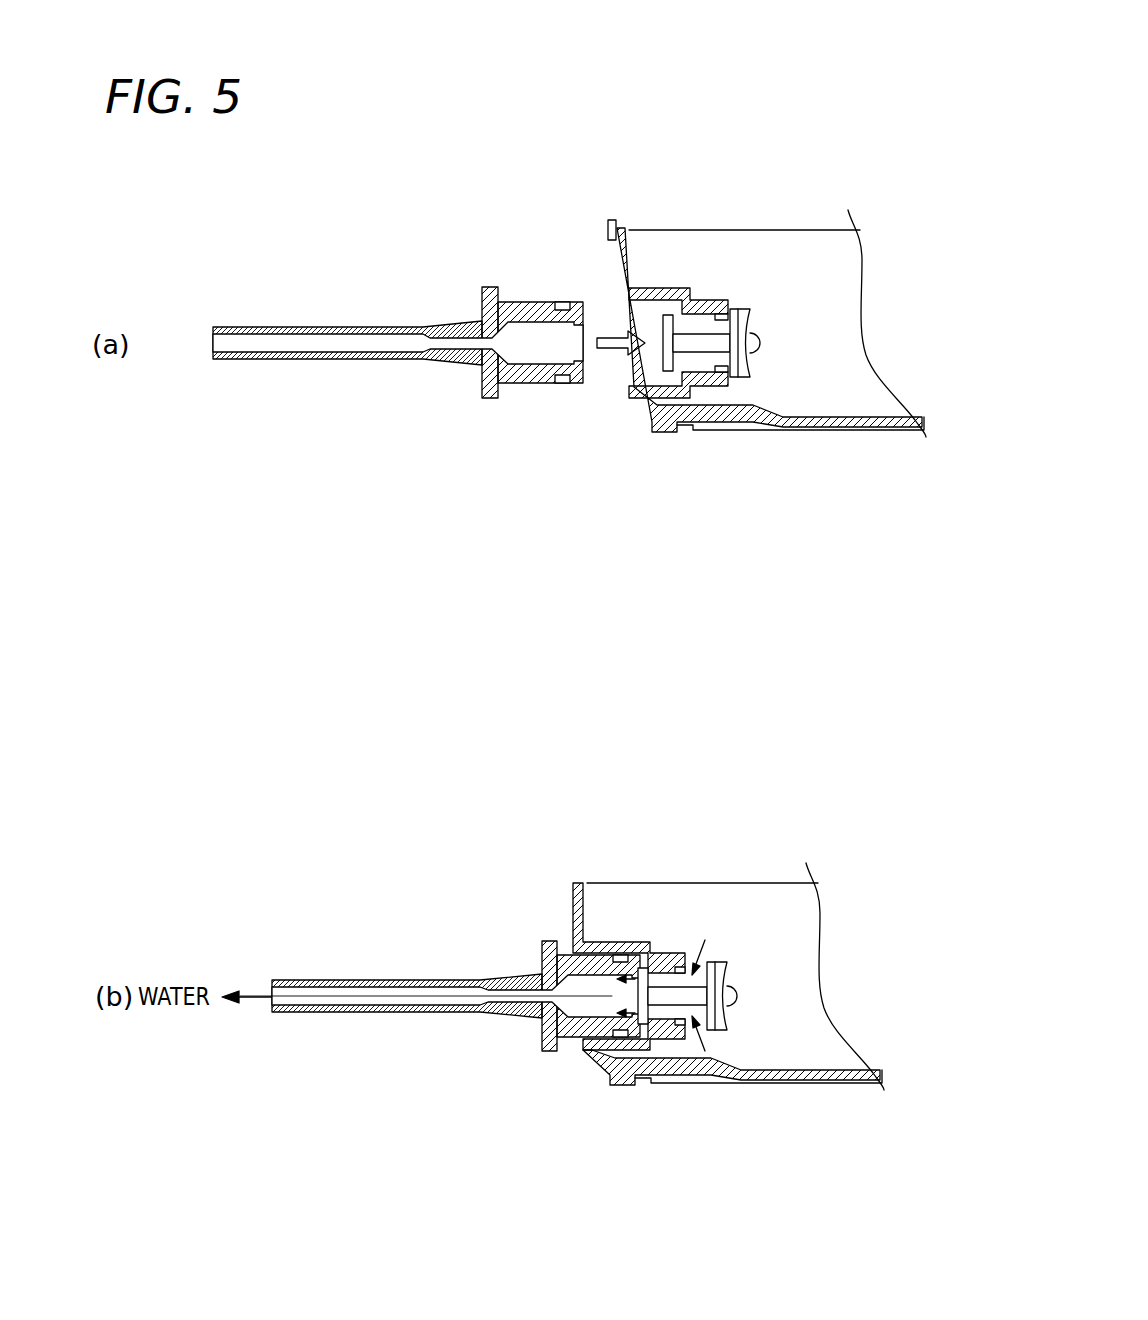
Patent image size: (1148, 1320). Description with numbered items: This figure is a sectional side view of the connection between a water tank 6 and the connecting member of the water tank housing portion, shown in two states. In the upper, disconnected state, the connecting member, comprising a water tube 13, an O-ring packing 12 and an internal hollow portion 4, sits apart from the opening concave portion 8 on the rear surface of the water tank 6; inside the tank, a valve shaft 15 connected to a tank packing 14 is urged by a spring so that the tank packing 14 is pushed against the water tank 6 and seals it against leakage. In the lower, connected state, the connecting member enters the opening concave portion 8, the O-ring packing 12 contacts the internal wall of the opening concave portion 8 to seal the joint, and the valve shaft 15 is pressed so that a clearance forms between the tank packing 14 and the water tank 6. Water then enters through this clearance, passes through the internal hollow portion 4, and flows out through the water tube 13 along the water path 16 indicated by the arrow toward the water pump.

The internal hollow portion 4 is at (550, 347).
The water tank 6 is at (609, 222).
The opening concave portion 8 is at (622, 370).
The O-ring packing 12 is at (562, 302).
The water tube 13 is at (458, 322).
The tank packing 14 is at (740, 315).
The valve shaft 15 is at (703, 340).
The water path 16 is at (578, 1005).